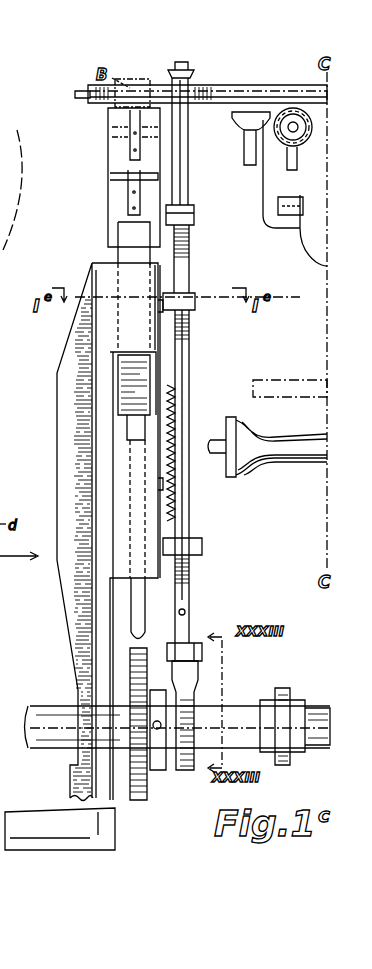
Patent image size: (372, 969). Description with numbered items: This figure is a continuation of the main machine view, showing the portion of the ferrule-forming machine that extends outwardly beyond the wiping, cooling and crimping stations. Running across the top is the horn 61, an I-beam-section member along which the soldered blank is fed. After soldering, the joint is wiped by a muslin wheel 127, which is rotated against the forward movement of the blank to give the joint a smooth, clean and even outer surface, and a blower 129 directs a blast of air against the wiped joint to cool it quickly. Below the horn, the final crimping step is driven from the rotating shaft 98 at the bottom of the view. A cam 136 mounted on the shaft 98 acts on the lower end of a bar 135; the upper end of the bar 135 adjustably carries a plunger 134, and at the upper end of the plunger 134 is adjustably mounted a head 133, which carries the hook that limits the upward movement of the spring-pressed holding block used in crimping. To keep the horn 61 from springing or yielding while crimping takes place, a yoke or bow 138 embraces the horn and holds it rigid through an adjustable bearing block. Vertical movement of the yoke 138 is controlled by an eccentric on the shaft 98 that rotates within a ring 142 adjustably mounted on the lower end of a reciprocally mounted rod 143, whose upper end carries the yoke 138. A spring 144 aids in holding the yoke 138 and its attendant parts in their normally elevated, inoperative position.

The horn 61 is at (252, 90).
The shaft 98 is at (40, 758).
The muslin wheel 127 is at (296, 148).
The blower 129 is at (240, 123).
The head 133 is at (108, 218).
The plunger 134 is at (196, 381).
The bar 135 is at (138, 600).
The cam 136 is at (136, 664).
The yoke or bow 138 is at (189, 185).
The ring 142 is at (186, 700).
The rod 143 is at (189, 514).
The spring 144 is at (172, 476).